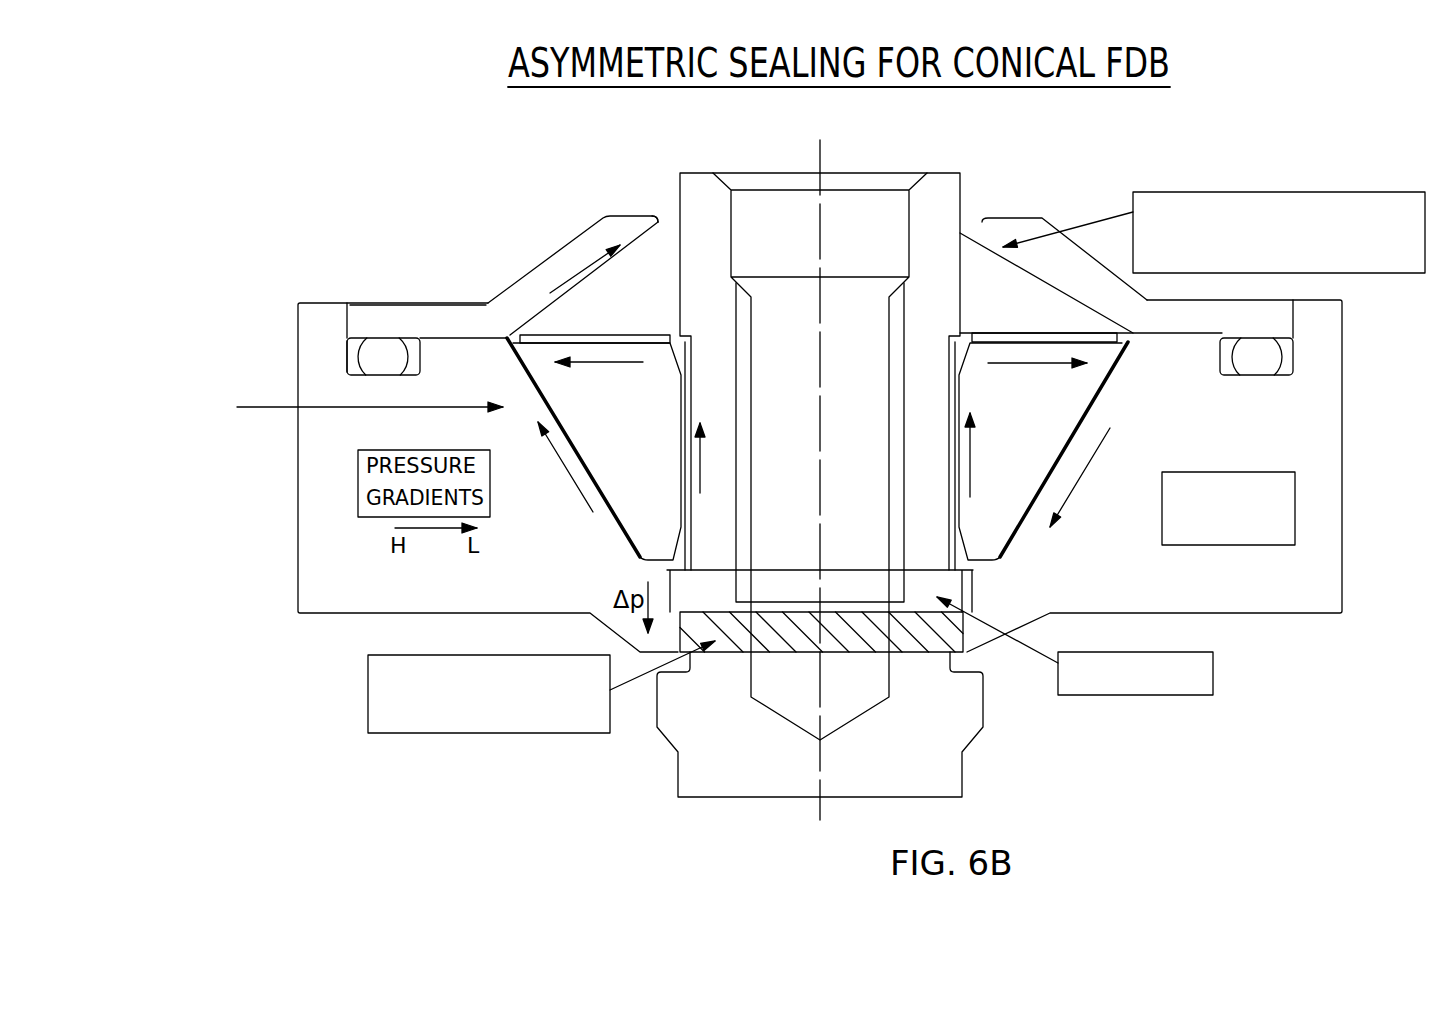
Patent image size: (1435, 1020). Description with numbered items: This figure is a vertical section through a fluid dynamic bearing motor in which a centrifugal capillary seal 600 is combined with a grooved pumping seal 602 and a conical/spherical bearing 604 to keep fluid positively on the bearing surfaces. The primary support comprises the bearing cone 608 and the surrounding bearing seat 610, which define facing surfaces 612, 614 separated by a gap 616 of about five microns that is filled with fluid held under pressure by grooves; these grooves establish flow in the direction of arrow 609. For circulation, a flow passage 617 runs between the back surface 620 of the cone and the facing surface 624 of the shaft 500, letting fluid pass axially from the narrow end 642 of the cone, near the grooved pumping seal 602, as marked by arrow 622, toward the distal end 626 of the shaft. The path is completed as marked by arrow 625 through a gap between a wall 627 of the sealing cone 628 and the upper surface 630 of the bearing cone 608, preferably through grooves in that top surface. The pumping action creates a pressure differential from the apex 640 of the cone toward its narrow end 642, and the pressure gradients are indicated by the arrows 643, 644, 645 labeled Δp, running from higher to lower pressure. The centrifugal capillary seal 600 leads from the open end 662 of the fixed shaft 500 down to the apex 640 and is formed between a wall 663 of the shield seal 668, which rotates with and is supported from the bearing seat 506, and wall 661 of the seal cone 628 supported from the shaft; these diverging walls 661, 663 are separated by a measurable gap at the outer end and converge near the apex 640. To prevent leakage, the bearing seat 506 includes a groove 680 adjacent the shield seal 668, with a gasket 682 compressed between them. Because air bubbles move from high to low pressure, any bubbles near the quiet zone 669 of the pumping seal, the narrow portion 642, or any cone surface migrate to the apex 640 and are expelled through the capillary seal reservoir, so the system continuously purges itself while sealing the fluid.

The shaft 500 is at (775, 162).
The bearing seat 506 is at (345, 358).
The centrifugal capillary seal 600 is at (1192, 246).
The grooved pumping seal 602 is at (665, 687).
The conical/spherical bearing 604 is at (357, 392).
The bearing cone 608 is at (1047, 455).
The flow direction arrow 609 is at (1087, 470).
The bearing seat 610 is at (1272, 418).
The facing surface of bearing cone 612 is at (1040, 483).
The facing surface of bearing seat 614 is at (1013, 533).
The gap 616 is at (1000, 553).
The flow passage 617 is at (953, 375).
The back surface of bearing cone 620 is at (960, 495).
The axial flow arrow 622 is at (963, 458).
The facing surface of shaft 624 is at (958, 522).
The return flow arrow 625 is at (1045, 365).
The distal end of shaft 626 is at (937, 190).
The wall of sealing cone 627 is at (985, 332).
The sealing cone 628 is at (673, 327).
The upper surface of bearing cone 630 is at (1010, 343).
The apex of bearing cone 640 is at (507, 337).
The narrow end of bearing cone 642 is at (653, 560).
The pressure gradient arrow 643 is at (620, 363).
The pressure gradient arrow 644 is at (572, 482).
The pressure gradient arrow 645 is at (703, 480).
The wall of seal cone 661 is at (585, 303).
The open end of shaft 662 is at (668, 233).
The wall of shield seal 663 is at (627, 247).
The shield seal 668 is at (412, 333).
The quiet zone 669 is at (1075, 662).
The groove 680 is at (347, 375).
The gasket 682 is at (382, 357).